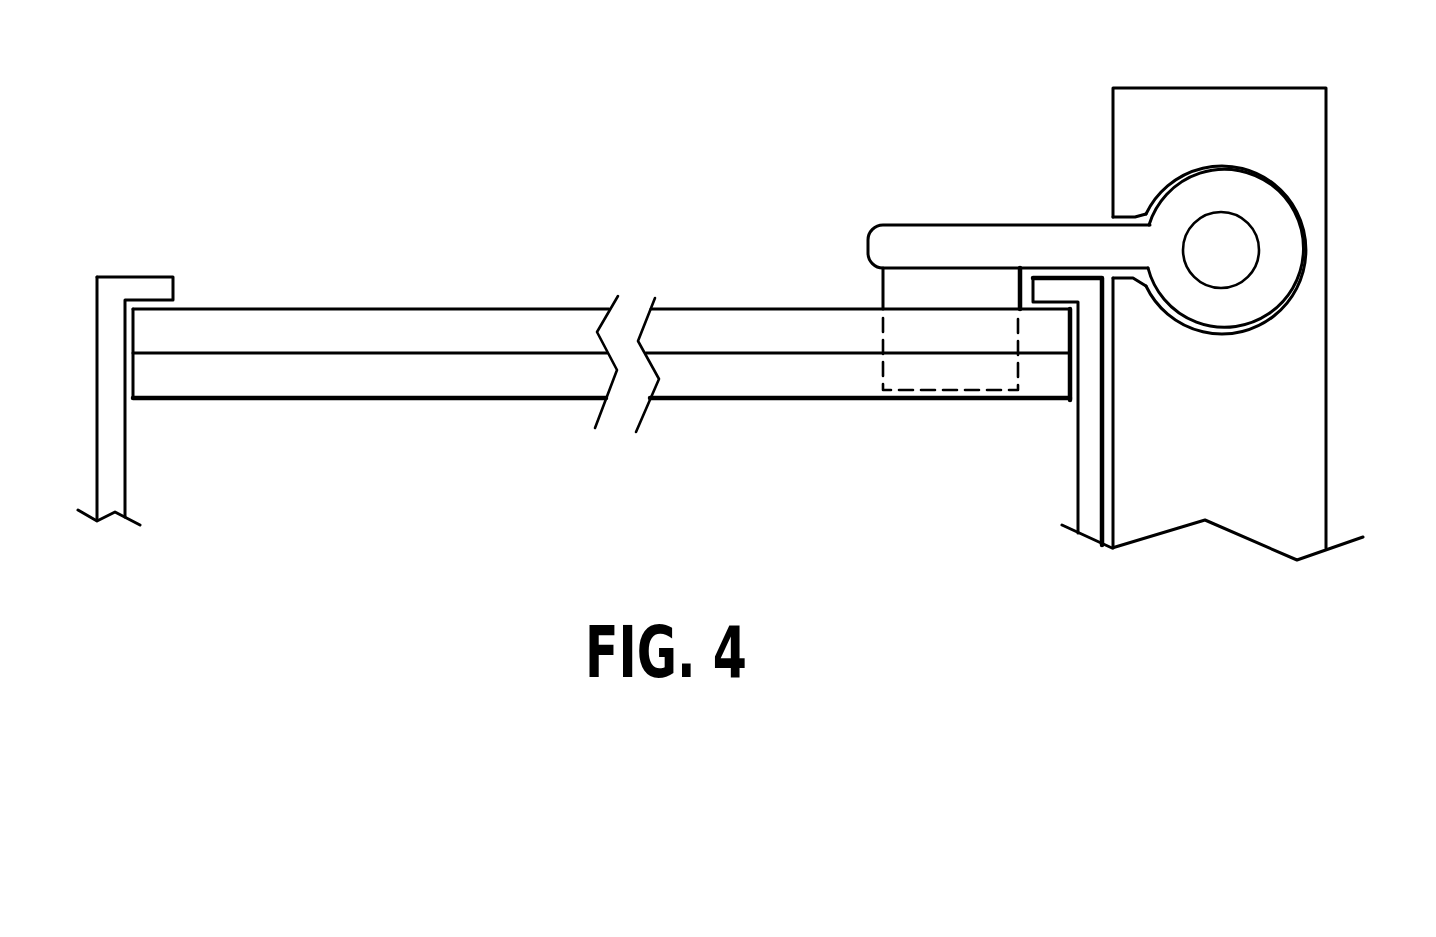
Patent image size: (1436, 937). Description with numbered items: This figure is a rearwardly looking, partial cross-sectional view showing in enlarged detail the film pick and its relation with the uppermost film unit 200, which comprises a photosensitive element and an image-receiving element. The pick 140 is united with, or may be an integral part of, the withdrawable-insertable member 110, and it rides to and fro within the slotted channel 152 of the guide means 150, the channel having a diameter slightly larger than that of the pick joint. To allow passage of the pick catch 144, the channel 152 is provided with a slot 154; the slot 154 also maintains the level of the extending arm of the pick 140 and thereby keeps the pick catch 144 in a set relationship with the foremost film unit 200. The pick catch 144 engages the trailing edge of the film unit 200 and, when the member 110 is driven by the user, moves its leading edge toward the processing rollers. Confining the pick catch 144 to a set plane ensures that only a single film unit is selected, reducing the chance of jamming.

The film unit 200 is at (278, 308).
The pick catch 144 is at (876, 327).
The slot 154 is at (1087, 192).
The slotted channel 152 is at (1212, 162).
The withdrawable-insertable member 110 is at (1259, 252).
The pick 140 is at (1223, 313).
The guide means 150 is at (1326, 88).